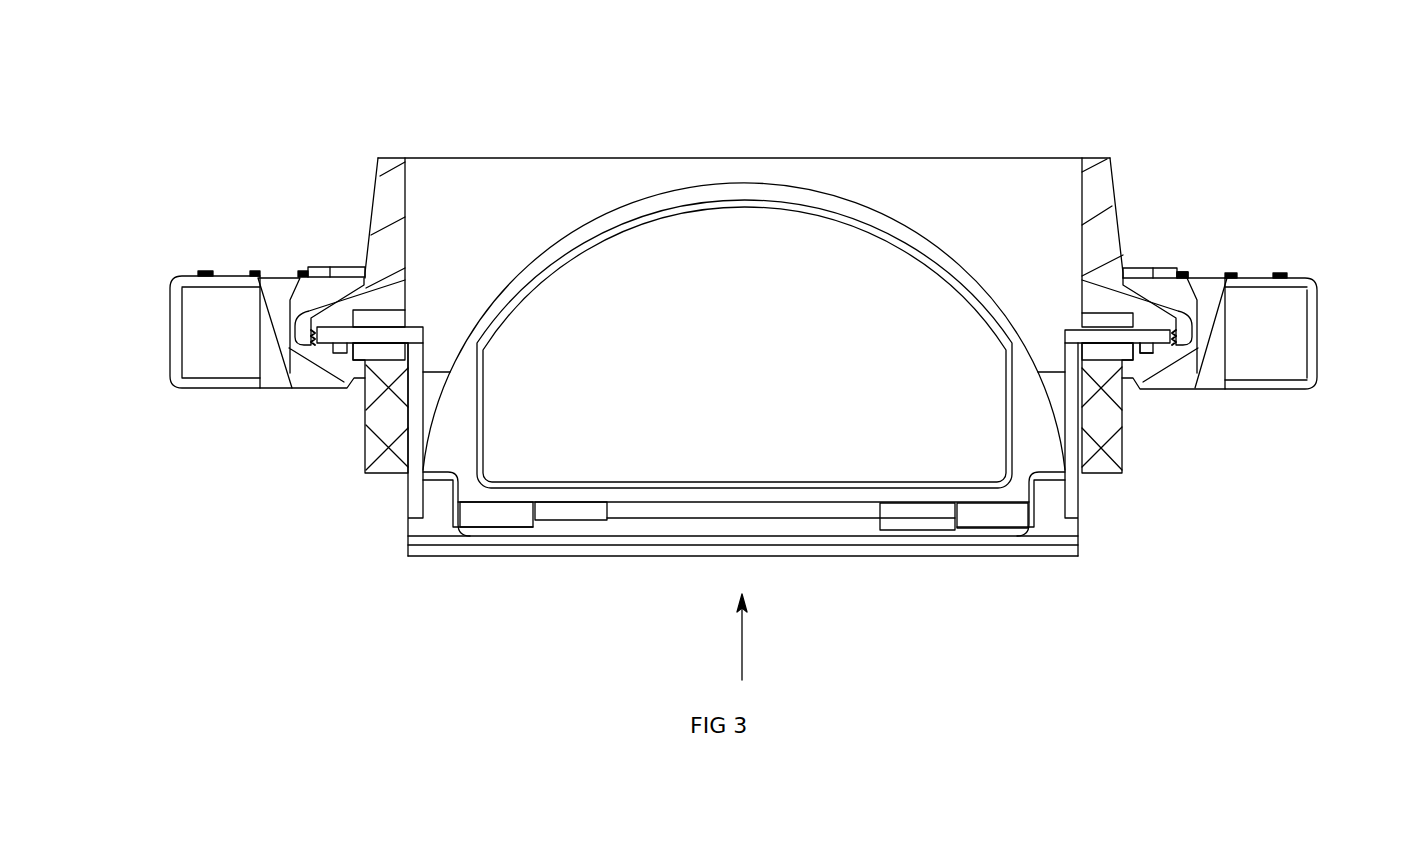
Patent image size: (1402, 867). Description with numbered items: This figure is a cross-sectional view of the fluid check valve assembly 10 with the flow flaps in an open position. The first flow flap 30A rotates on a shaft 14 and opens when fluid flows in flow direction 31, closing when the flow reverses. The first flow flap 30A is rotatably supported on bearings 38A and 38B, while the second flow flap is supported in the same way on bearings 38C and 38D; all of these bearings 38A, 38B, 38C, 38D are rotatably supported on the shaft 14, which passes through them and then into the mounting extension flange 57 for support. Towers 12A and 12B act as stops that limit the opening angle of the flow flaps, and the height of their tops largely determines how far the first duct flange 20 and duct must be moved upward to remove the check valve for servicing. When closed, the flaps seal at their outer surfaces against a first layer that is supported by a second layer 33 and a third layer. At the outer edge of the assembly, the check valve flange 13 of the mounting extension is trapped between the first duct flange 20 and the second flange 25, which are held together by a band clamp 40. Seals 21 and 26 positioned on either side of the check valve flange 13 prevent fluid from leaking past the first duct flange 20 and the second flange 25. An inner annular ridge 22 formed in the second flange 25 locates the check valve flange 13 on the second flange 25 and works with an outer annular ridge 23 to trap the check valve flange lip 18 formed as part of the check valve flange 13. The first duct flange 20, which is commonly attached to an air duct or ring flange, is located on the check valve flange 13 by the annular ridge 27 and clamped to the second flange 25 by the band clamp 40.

The fluid check valve assembly 10 is at (1076, 130).
The tower 12A is at (1103, 420).
The tower 12B is at (404, 365).
The check valve flange 13 is at (353, 340).
The shaft 14 is at (648, 510).
The check valve flange lip 18 is at (1163, 353).
The first duct flange 20 is at (1105, 202).
The seal 21 is at (383, 318).
The inner annular ridge 22 is at (1140, 345).
The outer annular ridge 23 is at (1182, 362).
The second flange 25 is at (1098, 462).
The seal 26 is at (376, 350).
The annular ridge 27 is at (1183, 275).
The first flow flap 30A is at (766, 348).
The flow direction 31 is at (745, 645).
The second layer 33 is at (828, 552).
The bearing 38A is at (495, 518).
The bearing 38B is at (912, 515).
The bearing 38C is at (583, 512).
The bearing 38D is at (997, 522).
The band clamp 40 is at (1290, 313).
The mounting extension flange 57 is at (417, 500).